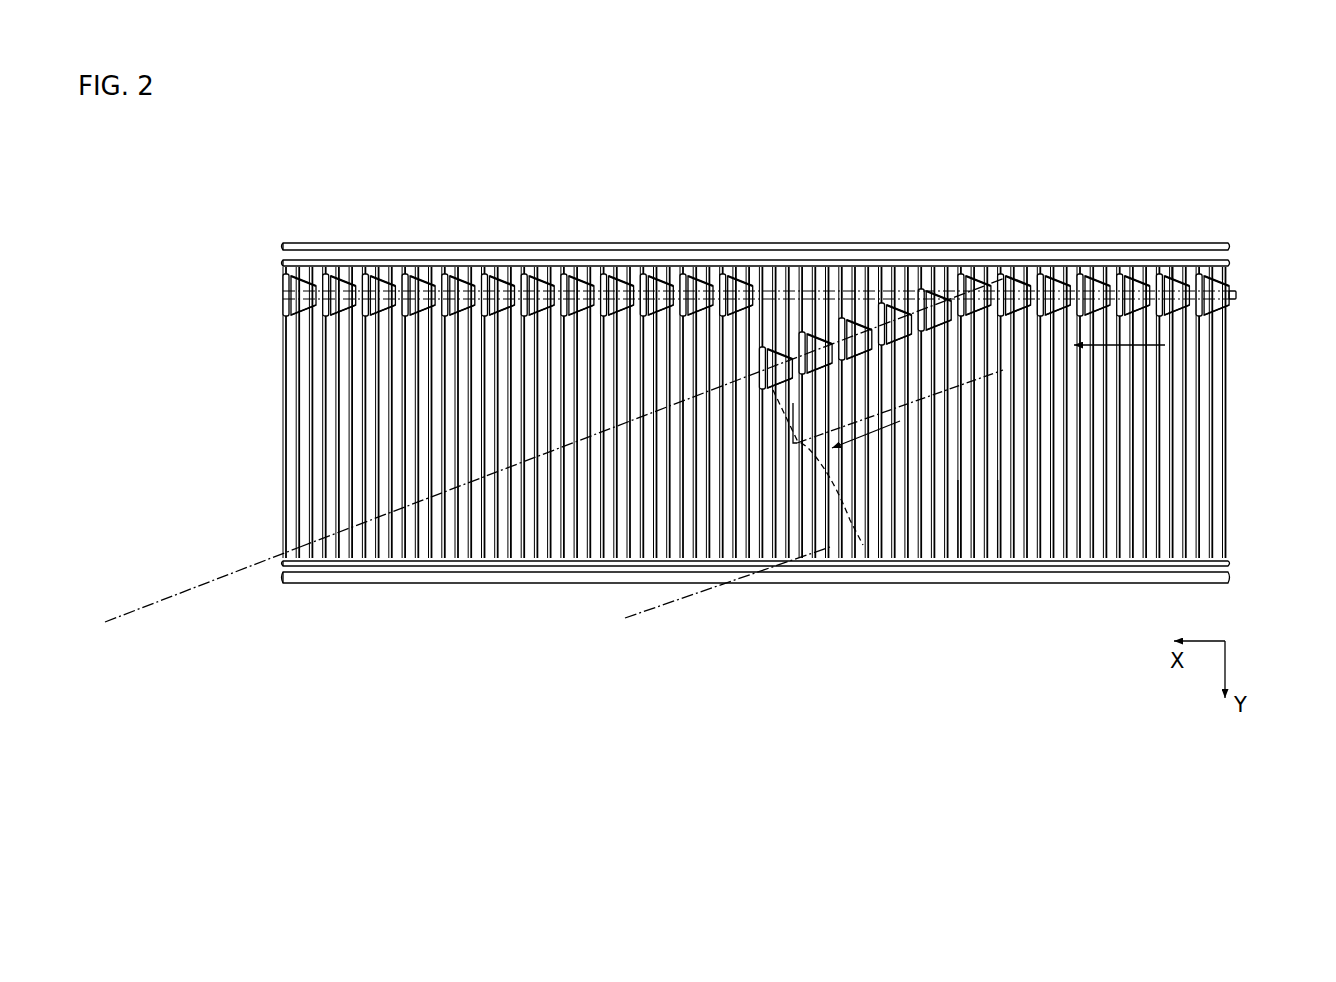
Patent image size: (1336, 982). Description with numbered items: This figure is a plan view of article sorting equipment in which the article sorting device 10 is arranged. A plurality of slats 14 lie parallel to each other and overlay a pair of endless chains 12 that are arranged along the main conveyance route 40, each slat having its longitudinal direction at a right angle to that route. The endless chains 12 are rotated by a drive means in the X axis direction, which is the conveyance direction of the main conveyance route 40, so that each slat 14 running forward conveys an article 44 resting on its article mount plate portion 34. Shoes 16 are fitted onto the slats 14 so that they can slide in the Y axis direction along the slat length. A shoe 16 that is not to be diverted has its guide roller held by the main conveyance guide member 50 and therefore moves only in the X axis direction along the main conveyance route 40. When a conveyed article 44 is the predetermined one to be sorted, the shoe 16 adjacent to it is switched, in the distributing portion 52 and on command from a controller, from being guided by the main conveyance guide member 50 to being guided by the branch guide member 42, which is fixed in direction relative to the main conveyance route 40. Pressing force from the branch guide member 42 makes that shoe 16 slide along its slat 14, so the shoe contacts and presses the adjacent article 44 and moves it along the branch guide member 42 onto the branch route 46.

The article sorting device 10 is at (897, 260).
The endless chain 12 is at (1128, 261).
The slat 14 is at (998, 528).
The shoe 16 is at (1172, 276).
The article mount plate portion 34 is at (1180, 526).
The main conveyance route 40 is at (270, 346).
The branch guide member 42 is at (396, 506).
The article 44 is at (866, 552).
The branch route 46 is at (205, 590).
The main conveyance guide member 50 is at (811, 270).
The distributing portion 52 is at (970, 260).